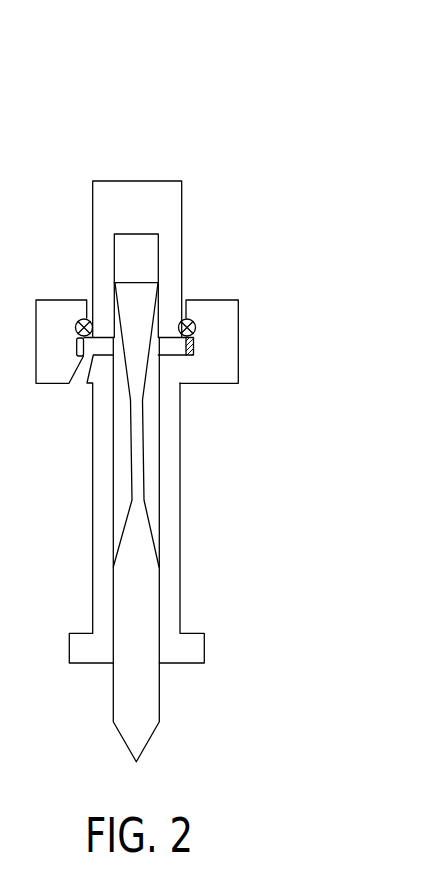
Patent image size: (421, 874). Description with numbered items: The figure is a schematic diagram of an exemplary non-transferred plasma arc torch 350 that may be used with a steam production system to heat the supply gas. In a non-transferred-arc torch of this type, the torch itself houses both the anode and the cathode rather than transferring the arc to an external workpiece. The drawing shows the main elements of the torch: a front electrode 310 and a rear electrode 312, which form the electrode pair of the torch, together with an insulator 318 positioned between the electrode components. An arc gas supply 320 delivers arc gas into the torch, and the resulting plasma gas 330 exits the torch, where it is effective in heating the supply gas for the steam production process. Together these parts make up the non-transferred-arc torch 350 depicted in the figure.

The non-transferred-arc torch 350 is at (323, 92).
The rear electrode 312 is at (182, 223).
The front electrode 310 is at (92, 603).
The insulator 318 is at (194, 355).
The arc gas supply 320 is at (80, 387).
The plasma gas 330 is at (113, 705).